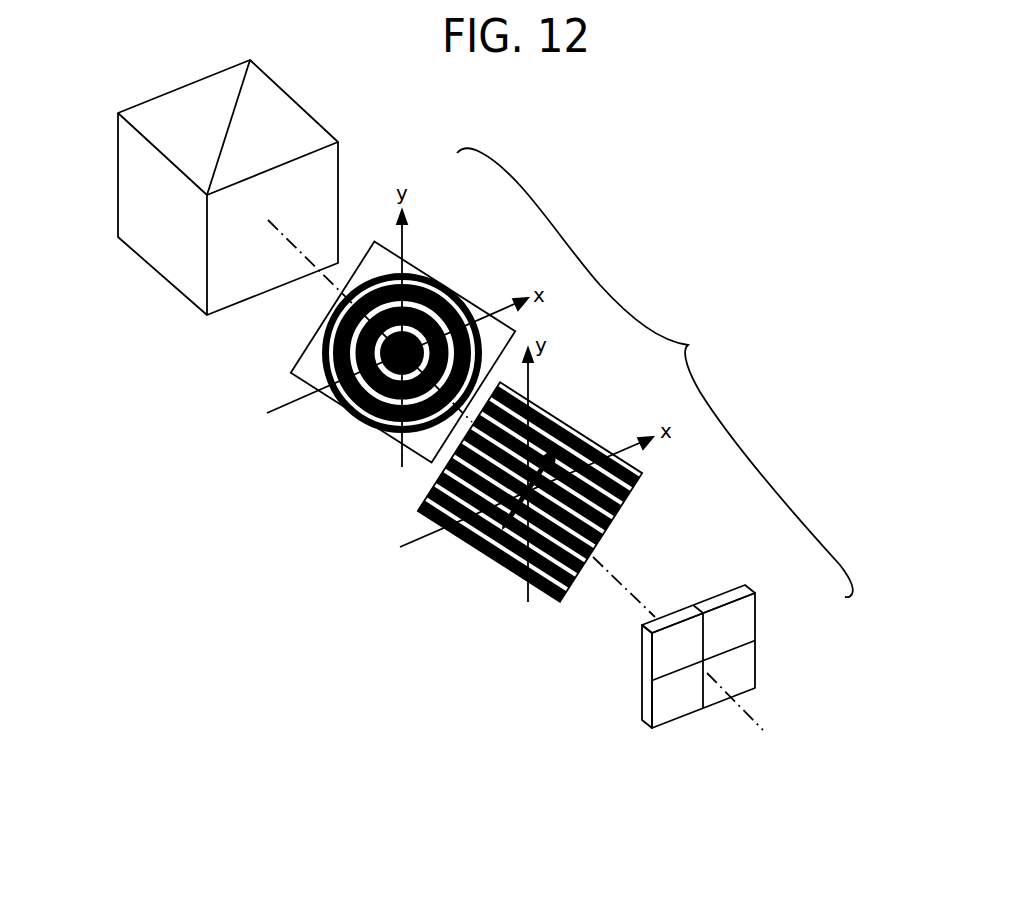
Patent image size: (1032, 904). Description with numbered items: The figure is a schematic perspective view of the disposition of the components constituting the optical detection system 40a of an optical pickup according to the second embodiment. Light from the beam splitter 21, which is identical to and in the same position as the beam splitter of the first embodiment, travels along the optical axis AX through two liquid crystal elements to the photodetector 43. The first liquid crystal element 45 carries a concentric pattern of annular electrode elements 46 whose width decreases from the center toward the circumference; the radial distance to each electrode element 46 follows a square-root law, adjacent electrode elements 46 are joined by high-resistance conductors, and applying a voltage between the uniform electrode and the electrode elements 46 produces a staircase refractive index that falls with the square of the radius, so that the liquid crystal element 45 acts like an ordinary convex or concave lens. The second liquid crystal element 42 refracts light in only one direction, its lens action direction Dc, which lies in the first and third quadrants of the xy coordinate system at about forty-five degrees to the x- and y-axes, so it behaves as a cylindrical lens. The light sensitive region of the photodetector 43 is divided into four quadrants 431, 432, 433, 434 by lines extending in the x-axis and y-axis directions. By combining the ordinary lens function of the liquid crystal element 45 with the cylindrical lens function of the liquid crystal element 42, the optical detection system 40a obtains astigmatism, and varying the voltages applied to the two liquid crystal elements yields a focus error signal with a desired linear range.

The beam splitter 21 is at (168, 228).
The liquid crystal element 45 is at (332, 403).
The annular electrode elements 46 is at (382, 400).
The liquid crystal element 42 is at (472, 517).
The photodetector 43 is at (645, 698).
The quadrant 431 is at (755, 625).
The quadrant 432 is at (665, 638).
The quadrant 433 is at (673, 712).
The quadrant 434 is at (735, 682).
The optical detection system 40a is at (655, 372).
The optical axis AX is at (628, 580).
The lens action direction Dc is at (582, 431).